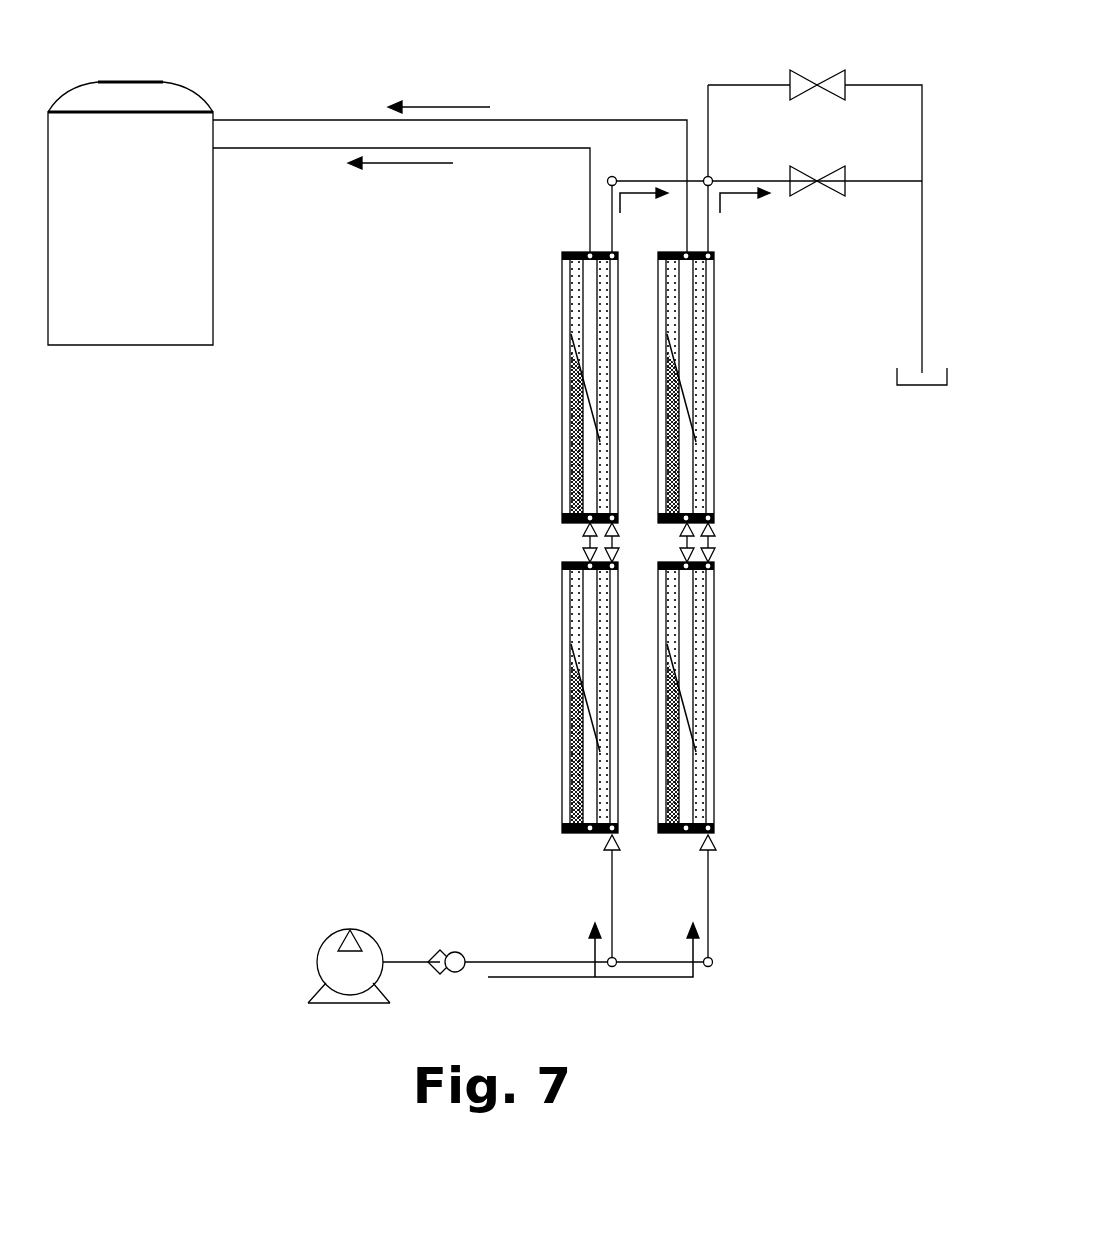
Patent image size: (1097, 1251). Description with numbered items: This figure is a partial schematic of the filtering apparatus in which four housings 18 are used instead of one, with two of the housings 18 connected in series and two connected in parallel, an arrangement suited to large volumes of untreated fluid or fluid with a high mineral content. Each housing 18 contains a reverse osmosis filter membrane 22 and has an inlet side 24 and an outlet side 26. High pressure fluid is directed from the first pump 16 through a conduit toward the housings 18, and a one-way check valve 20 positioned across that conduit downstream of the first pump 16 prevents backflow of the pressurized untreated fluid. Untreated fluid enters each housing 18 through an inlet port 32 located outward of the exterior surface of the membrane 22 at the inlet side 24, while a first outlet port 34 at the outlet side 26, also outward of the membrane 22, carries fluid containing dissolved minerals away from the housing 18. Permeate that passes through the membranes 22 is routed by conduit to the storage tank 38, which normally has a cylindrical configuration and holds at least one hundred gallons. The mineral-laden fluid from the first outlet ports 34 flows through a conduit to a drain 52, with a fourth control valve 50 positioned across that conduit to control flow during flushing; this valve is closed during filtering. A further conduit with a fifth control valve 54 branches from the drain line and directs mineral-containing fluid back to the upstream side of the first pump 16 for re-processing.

The first pump 16 is at (366, 934).
The housing 18 is at (560, 437).
The one-way check valve 20 is at (466, 952).
The reverse osmosis filter membrane 22 is at (580, 318).
The inlet side 24 is at (568, 835).
The outlet side 26 is at (572, 252).
The inlet port 32 is at (716, 521).
The first outlet port 34 is at (614, 252).
The storage tank 38 is at (200, 98).
The fourth control valve 50 is at (826, 70).
The drain 52 is at (928, 385).
The fifth control valve 54 is at (833, 168).